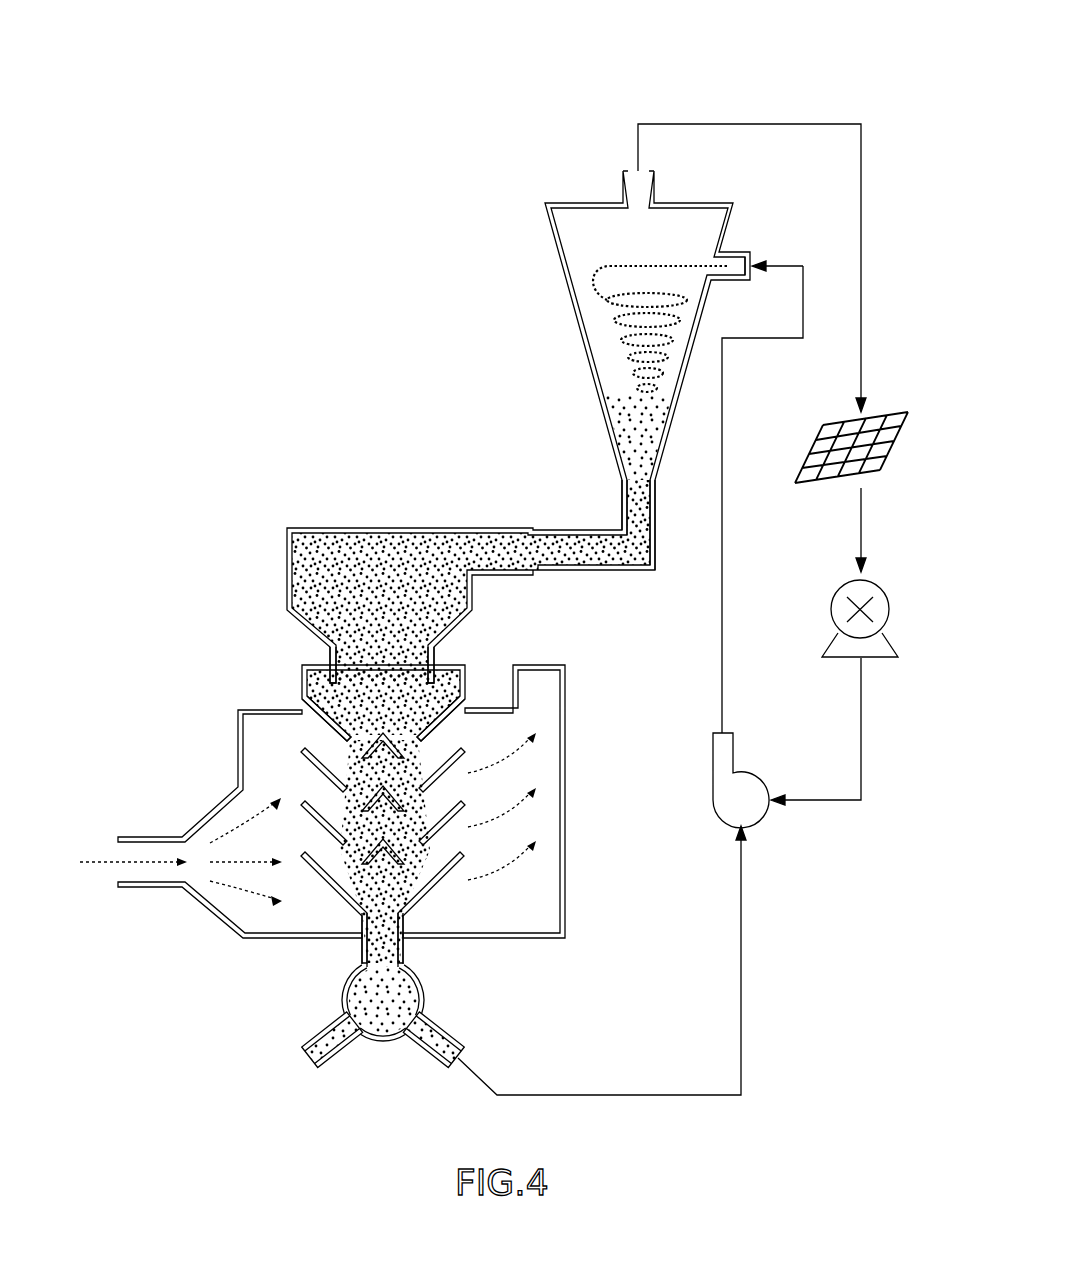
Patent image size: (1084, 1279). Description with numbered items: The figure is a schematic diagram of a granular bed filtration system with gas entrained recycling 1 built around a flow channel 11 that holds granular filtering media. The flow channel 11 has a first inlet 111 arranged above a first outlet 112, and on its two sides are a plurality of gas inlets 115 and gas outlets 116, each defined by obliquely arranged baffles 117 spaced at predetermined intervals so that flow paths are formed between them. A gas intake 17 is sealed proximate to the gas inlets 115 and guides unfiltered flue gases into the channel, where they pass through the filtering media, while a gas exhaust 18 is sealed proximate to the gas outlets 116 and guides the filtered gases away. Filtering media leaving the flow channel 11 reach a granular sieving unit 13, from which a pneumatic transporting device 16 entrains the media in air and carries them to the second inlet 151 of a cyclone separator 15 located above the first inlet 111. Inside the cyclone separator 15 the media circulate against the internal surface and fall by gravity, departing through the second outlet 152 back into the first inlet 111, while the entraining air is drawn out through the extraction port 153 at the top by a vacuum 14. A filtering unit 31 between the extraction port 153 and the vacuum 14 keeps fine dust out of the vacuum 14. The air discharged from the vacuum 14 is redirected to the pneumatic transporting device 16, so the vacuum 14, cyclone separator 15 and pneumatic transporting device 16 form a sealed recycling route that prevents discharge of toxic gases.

The granular bed filtration system with gas entrained recycling 1 is at (778, 36).
The flow channel 11 is at (245, 676).
The first inlet 111 is at (385, 685).
The first outlet 112 is at (365, 946).
The gas inlet 115 is at (333, 793).
The gas outlet 116 is at (440, 797).
The baffles 117 is at (346, 734).
The granular sieving unit 13 is at (431, 979).
The vacuum 14 is at (829, 589).
The cyclone separator 15 is at (573, 341).
The second inlet 151 is at (737, 268).
The second outlet 152 is at (640, 511).
The extraction port 153 is at (648, 183).
The pneumatic transporting device 16 is at (750, 757).
The gas intake 17 is at (233, 745).
The gas exhaust 18 is at (575, 788).
The filtering unit 31 is at (820, 432).